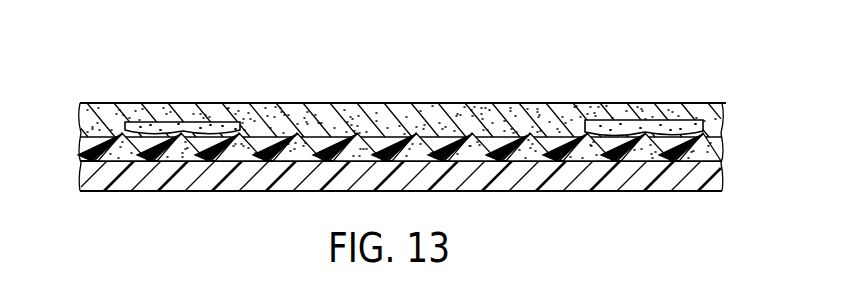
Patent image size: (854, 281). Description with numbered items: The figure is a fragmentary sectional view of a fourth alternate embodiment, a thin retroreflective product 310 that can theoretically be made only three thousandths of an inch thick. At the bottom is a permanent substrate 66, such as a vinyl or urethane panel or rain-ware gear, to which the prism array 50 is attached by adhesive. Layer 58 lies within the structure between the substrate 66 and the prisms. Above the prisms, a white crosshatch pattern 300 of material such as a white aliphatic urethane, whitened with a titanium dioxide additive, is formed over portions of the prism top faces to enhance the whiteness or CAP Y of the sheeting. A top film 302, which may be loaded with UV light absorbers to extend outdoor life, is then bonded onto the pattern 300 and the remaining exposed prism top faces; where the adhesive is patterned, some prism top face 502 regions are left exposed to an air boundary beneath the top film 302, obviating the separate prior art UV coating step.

The retroreflective product 310 is at (123, 87).
The white crosshatch pattern 300 is at (193, 122).
The prism top face 502 is at (325, 138).
The top film 302 is at (452, 115).
The prism array 50 is at (545, 133).
The retroreflective element layer 58 is at (723, 152).
The substrate 66 is at (723, 178).